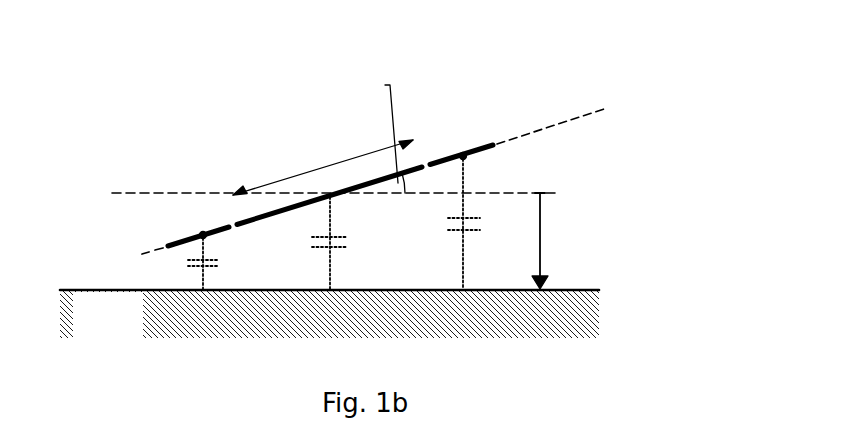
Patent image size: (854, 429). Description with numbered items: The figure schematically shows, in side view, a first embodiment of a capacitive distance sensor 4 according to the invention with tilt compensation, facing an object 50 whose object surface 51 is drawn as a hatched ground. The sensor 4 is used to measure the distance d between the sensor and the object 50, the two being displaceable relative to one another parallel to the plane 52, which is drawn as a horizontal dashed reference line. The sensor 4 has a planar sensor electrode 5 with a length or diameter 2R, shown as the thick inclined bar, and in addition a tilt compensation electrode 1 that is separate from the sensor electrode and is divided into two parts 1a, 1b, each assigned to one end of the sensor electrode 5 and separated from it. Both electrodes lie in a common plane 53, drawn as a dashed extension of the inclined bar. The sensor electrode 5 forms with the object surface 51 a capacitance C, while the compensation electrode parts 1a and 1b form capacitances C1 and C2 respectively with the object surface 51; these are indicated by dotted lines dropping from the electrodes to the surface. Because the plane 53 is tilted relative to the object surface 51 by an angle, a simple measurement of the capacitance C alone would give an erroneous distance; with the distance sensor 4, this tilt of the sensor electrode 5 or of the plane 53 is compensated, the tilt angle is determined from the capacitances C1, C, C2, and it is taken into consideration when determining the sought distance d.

The tilt compensation electrode 1 is at (319, 155).
The compensation electrode part 1a is at (214, 232).
The compensation electrode part 1b is at (443, 150).
The capacitive distance sensor 4 is at (319, 137).
The sensor electrode 5 is at (366, 177).
The length or diameter of sensor electrode 2R is at (310, 171).
The object 50 is at (120, 342).
The object surface 51 is at (560, 288).
The plane 52 is at (200, 193).
The plane of electrodes 53 is at (537, 130).
The distance d is at (543, 215).
The capacitance C1 is at (190, 262).
The capacitance C is at (312, 238).
The capacitance C2 is at (452, 219).